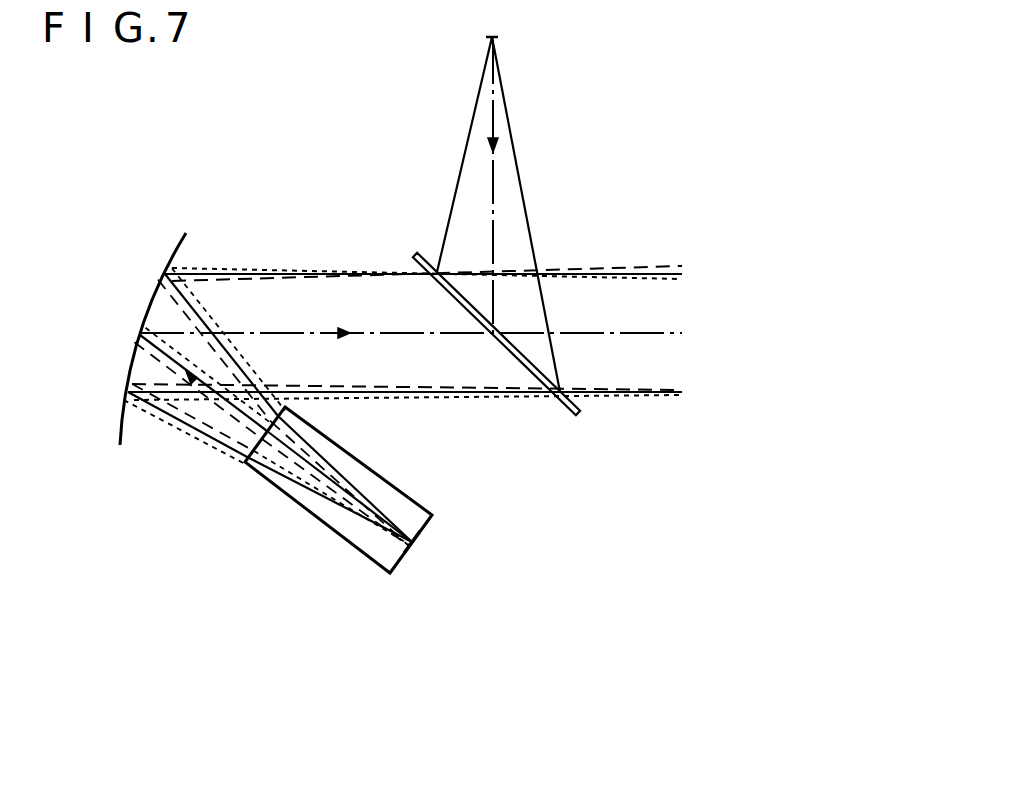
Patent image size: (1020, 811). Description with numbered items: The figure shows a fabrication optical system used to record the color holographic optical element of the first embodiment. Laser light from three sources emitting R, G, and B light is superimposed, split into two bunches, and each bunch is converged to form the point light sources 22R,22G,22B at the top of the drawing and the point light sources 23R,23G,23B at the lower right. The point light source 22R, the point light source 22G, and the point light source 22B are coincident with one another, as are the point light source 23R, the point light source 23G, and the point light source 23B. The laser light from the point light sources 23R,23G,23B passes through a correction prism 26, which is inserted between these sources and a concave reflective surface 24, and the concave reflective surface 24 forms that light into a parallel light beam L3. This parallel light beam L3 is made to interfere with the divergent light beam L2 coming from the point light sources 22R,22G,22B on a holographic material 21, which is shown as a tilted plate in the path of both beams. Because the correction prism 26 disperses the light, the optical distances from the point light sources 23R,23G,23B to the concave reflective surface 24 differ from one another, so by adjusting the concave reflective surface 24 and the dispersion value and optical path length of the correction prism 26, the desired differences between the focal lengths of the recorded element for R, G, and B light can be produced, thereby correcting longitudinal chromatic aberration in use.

The point light source 22R is at (590, 38).
The point light source 22G is at (590, 38).
The point light source 22B is at (495, 37).
The point light sources 22R,22G,22B is at (590, 38).
The divergent light beam L2 is at (515, 200).
The holographic material 21 is at (563, 408).
The concave reflective surface 24 is at (172, 257).
The parallel light beam L3 is at (315, 287).
The correction prism 26 is at (318, 521).
The point light source 23R is at (439, 492).
The point light source 23G is at (439, 492).
The point light source 23B is at (418, 545).
The point light sources 23R,23G,23B is at (439, 492).